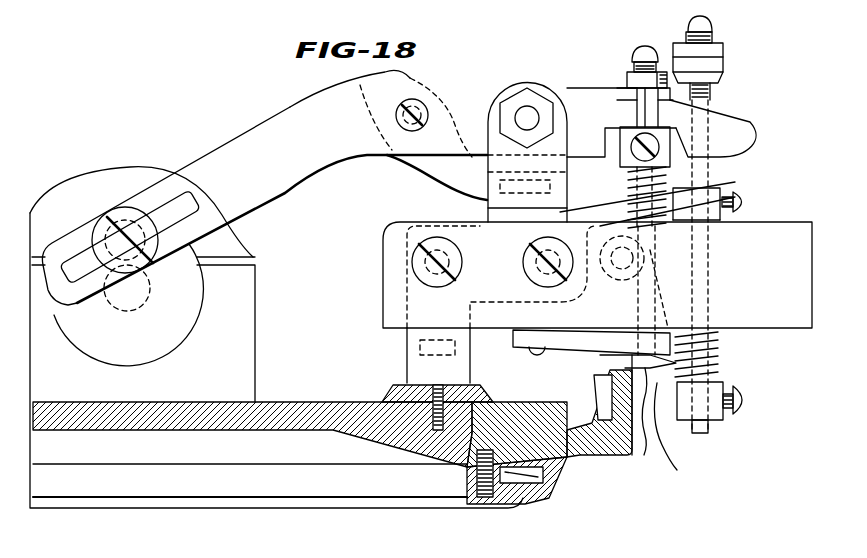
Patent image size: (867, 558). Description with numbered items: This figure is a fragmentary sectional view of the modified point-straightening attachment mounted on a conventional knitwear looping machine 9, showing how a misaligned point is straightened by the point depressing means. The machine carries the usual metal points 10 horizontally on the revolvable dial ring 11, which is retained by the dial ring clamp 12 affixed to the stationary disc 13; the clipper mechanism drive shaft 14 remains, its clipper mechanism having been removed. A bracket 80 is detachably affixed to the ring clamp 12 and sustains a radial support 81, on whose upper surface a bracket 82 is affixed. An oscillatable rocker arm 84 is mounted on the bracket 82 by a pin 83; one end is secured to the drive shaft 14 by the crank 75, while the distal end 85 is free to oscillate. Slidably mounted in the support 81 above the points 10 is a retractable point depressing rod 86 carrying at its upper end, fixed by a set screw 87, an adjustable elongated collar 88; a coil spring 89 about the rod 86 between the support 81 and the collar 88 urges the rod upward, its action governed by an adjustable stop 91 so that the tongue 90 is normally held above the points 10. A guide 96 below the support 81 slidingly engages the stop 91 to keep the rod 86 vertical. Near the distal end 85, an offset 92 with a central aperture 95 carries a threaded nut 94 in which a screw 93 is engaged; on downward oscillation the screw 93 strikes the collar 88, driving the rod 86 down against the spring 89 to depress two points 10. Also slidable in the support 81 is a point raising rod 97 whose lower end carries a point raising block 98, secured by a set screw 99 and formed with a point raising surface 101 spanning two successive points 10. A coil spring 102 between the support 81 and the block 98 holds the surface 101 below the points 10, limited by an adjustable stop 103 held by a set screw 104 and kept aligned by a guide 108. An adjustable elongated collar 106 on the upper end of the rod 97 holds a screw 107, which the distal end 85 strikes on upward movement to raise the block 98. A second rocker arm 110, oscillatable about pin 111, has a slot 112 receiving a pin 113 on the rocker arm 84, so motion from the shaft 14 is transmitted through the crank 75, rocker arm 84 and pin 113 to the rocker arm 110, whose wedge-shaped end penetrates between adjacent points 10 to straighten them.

The knitwear looping machine 9 is at (283, 513).
The points 10 is at (653, 415).
The dial ring 11 is at (520, 403).
The dial ring clamp 12 is at (393, 393).
The stationary disc 13 is at (297, 385).
The drive shaft 14 is at (167, 160).
The crank 75 is at (125, 213).
The bracket 80 is at (413, 362).
The radial support 81 is at (597, 288).
The bracket 82 is at (527, 84).
The pin 83 is at (520, 110).
The rocker arm 84 is at (298, 165).
The distal end 85 is at (750, 122).
The point depressing rod 86 is at (642, 107).
The set screw 87 is at (672, 140).
The adjustable elongated collar 88 is at (623, 141).
The coil spring 89 is at (632, 174).
The tongue 90 is at (640, 354).
The adjustable stop 91 is at (667, 330).
The offset 92 is at (627, 100).
The screw 93 is at (644, 46).
The threaded nut 94 is at (627, 78).
The aperture 95 is at (627, 88).
The guide 96 is at (613, 340).
The point raising rod 97 is at (713, 178).
The point raising block 98 is at (713, 410).
The set screw 99 is at (747, 398).
The point raising surface 101 is at (689, 433).
The coil spring 102 is at (720, 351).
The adjustable stop 103 is at (690, 192).
The set screw 104 is at (748, 202).
The adjustable elongated collar 106 is at (720, 63).
The screw 107 is at (703, 23).
The guide 108 is at (697, 207).
The second rocker arm 110 is at (433, 172).
The pin 111 is at (648, 258).
The slot 112 is at (392, 109).
The pin 113 is at (395, 127).